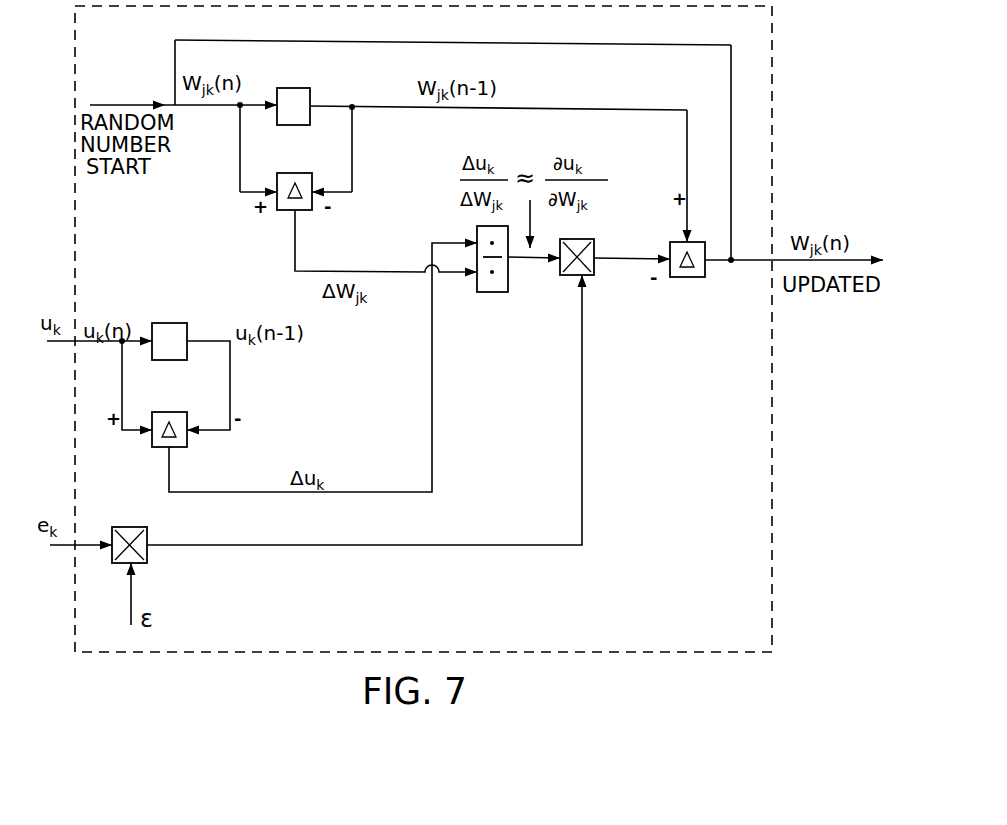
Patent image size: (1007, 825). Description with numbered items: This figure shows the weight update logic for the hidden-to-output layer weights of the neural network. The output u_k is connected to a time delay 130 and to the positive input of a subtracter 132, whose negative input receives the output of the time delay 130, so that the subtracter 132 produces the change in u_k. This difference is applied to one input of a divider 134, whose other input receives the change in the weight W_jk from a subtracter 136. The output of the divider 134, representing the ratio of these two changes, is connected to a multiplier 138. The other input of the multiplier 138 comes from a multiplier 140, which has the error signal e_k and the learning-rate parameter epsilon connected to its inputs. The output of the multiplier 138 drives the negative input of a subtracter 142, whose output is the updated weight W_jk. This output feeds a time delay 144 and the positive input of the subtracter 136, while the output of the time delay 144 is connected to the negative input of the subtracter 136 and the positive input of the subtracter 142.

The time delay 130 is at (187, 325).
The subtracter 132 is at (187, 447).
The divider 134 is at (480, 292).
The subtracter 136 is at (312, 208).
The multiplier 138 is at (594, 275).
The multiplier 140 is at (147, 563).
The subtracter 142 is at (705, 277).
The time delay 144 is at (310, 89).